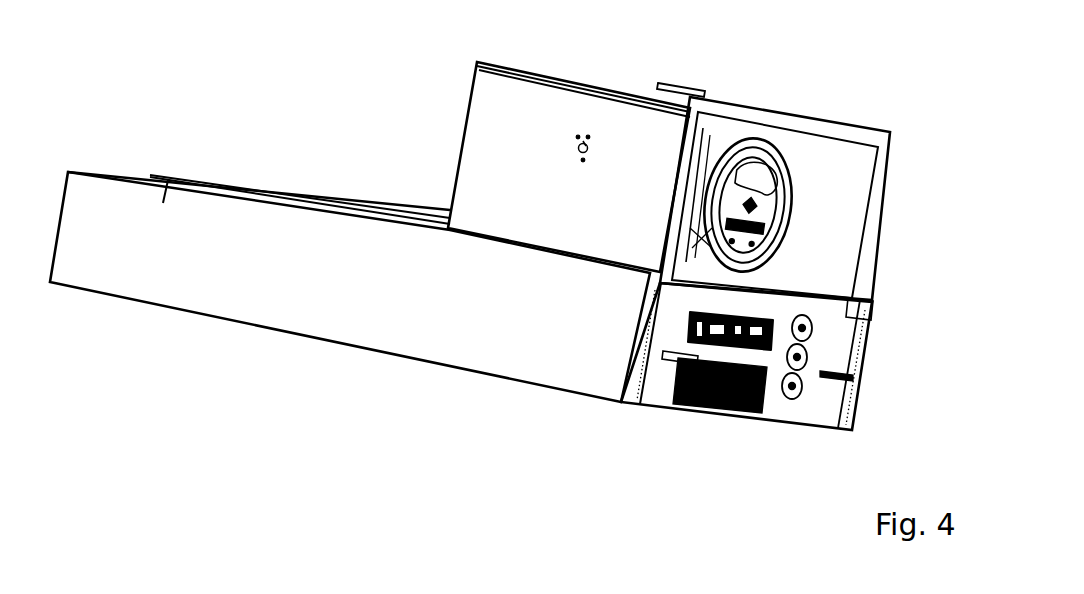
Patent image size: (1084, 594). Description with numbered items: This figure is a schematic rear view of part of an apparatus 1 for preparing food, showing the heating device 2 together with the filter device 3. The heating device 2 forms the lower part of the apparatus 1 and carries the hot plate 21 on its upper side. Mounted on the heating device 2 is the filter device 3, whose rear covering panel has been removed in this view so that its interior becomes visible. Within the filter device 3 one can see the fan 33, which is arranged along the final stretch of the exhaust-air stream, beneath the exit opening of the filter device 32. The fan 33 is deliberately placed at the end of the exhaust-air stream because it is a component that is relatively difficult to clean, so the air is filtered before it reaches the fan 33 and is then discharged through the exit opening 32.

The apparatus 1 is at (46, 68).
The heating device 2 is at (263, 253).
The hot plate 21 is at (358, 193).
The filter device 3 is at (502, 95).
The exit opening of the filter device 32 is at (710, 92).
The fan 33 is at (762, 182).